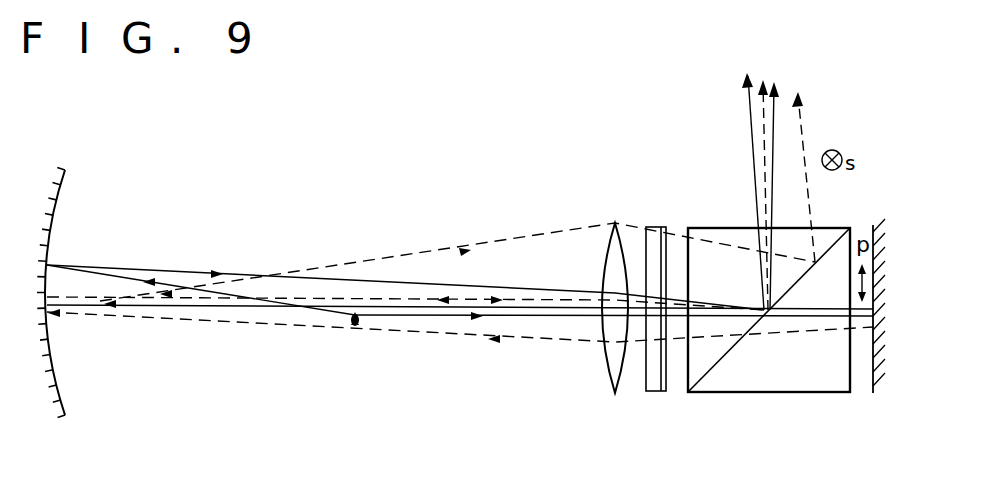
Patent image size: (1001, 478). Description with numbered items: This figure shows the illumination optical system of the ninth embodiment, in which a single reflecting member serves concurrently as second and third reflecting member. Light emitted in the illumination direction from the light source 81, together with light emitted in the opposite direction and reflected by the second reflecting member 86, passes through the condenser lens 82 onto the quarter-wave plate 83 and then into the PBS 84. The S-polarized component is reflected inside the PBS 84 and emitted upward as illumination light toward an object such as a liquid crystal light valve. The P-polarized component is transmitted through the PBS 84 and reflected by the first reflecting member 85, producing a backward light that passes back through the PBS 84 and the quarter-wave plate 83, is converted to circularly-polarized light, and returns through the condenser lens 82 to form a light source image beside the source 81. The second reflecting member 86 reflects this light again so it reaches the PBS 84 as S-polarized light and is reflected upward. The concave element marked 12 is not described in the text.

The concave mirror 12 is at (68, 311).
The second reflecting member 86 is at (68, 183).
The light source 81 is at (353, 326).
The condenser lens 82 is at (612, 380).
The quarter-wave plate 83 is at (651, 389).
The PBS 84 is at (718, 392).
The first reflecting member 85 is at (870, 386).